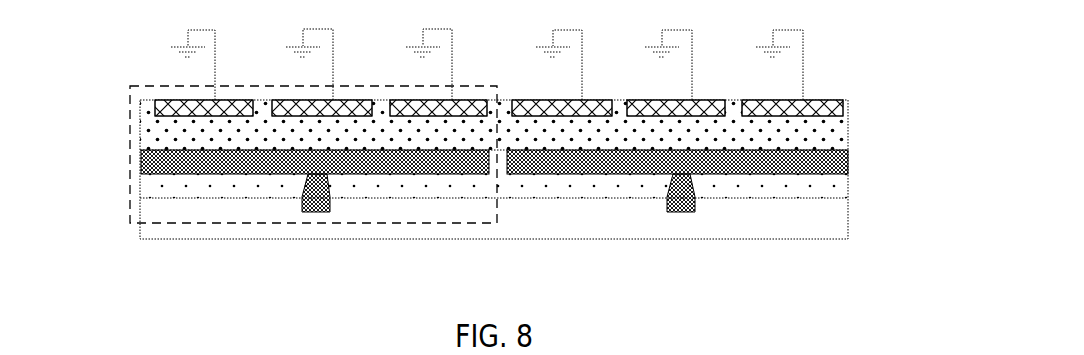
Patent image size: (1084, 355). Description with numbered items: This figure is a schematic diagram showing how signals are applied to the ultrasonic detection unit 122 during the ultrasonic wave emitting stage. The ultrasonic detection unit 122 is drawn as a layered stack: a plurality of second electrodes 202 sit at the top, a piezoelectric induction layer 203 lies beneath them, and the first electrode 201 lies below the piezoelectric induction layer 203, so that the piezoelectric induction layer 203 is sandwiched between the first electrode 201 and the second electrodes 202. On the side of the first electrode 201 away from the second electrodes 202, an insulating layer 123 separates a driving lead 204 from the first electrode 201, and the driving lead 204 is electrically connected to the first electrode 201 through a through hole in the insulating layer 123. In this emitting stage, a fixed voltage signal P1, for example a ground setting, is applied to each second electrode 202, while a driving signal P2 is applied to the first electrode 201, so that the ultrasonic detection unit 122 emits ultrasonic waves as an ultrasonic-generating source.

The ultrasonic detection unit 122 is at (367, 223).
The insulating layer 123 is at (833, 226).
The first electrode 201 is at (568, 162).
The second electrode 202 is at (830, 107).
The piezoelectric induction layer 203 is at (835, 133).
The driving lead 204 is at (680, 203).
The fixed voltage signal P1 is at (487, 52).
The driving signal P2 is at (146, 156).